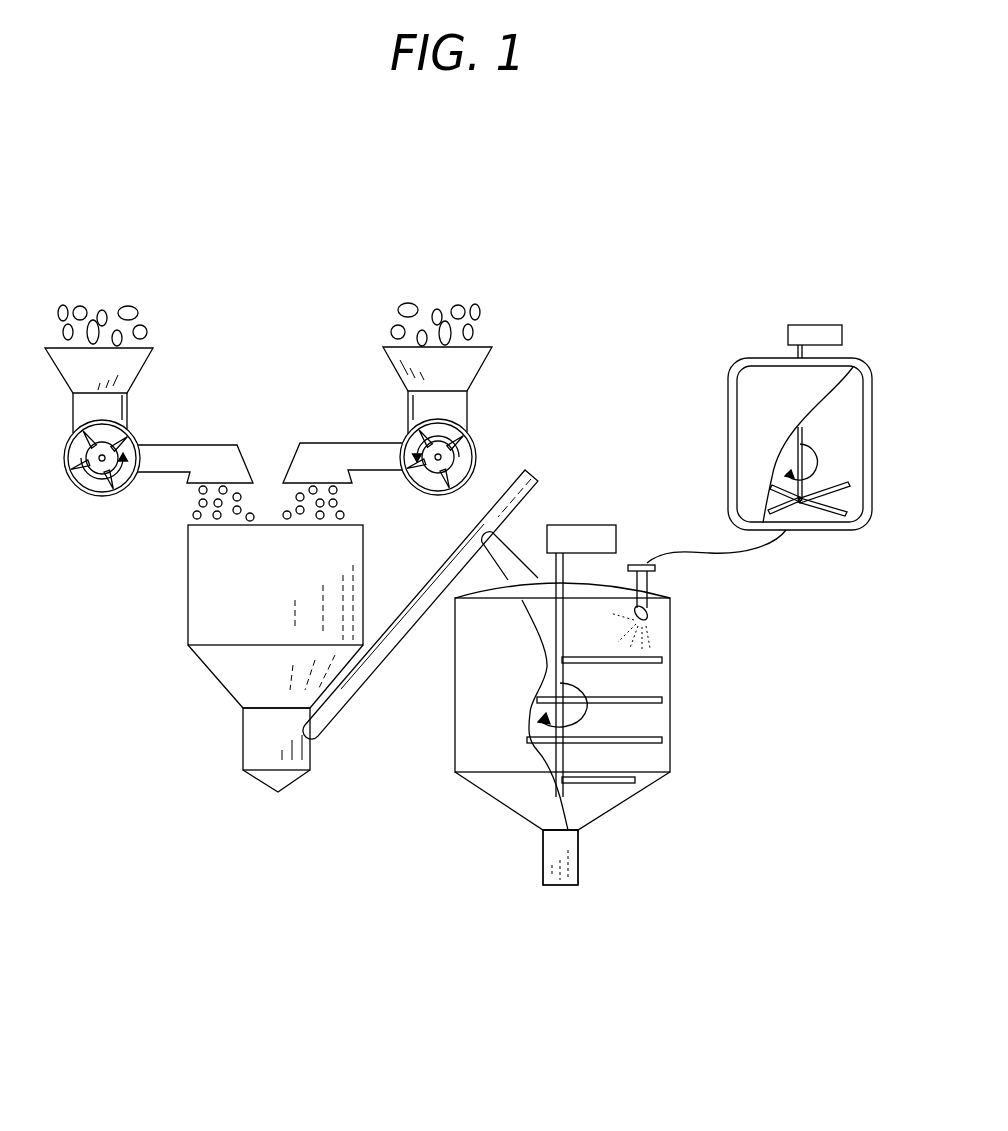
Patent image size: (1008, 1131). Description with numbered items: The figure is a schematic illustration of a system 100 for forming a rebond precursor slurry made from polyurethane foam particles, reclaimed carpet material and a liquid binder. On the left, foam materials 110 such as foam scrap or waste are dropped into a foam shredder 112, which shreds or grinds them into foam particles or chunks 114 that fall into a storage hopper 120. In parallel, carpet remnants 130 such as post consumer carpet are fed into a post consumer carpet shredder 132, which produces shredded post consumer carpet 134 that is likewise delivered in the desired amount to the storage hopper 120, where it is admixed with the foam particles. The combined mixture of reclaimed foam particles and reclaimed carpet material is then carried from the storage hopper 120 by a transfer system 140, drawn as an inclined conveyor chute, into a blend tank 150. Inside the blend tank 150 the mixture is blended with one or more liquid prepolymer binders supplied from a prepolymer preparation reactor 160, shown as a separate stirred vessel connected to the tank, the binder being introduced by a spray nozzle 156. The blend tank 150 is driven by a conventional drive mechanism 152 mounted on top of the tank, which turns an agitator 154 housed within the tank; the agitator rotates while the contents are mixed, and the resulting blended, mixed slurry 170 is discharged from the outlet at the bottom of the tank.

The system 100 is at (265, 878).
The foam materials 110 is at (83, 306).
The foam shredder 112 is at (122, 397).
The foam particles 114 is at (193, 514).
The storage hopper 120 is at (208, 592).
The carpet remnants 130 is at (487, 312).
The post consumer carpet shredder 132 is at (462, 397).
The post consumer carpet 134 is at (347, 513).
The transfer system 140 is at (417, 623).
The blend tank 150 is at (640, 715).
The drive mechanism 152 is at (585, 522).
The agitator 154 is at (560, 750).
The spray nozzle 156 is at (646, 617).
The prepolymer preparation reactor 160 is at (812, 518).
The slurry 170 is at (567, 885).